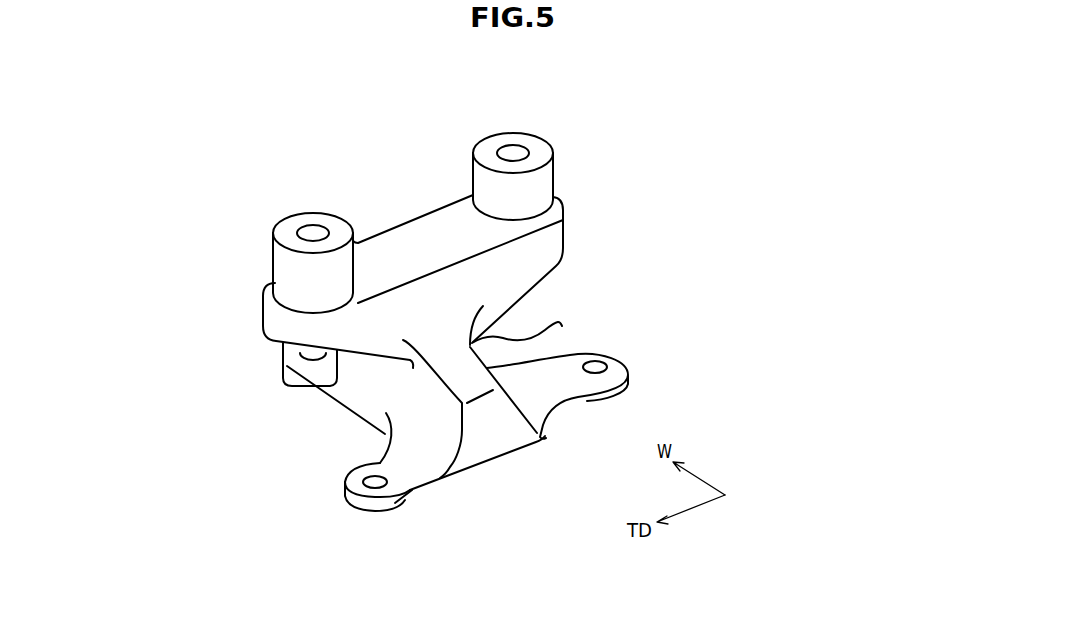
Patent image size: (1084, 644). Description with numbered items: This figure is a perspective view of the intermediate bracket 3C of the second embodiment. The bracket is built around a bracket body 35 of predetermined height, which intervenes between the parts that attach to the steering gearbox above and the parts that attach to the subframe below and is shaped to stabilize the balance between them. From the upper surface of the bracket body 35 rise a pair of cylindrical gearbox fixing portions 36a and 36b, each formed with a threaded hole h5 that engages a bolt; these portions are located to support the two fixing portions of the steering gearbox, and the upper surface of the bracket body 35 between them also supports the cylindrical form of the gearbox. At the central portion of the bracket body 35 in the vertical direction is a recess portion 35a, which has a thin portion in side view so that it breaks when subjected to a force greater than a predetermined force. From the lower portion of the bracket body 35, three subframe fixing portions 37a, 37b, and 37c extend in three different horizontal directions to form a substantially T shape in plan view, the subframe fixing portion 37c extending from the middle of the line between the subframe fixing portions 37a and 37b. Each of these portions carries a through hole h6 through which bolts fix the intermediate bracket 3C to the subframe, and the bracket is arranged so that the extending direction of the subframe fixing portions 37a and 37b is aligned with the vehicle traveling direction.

The intermediate bracket 3C is at (642, 222).
The bracket body 35 is at (553, 247).
The recess portion 35a is at (560, 328).
The gearbox fixing portion 36a is at (283, 230).
The gearbox fixing portion 36b is at (542, 147).
The threaded hole h5 is at (312, 231).
The subframe fixing portion 37a is at (363, 502).
The subframe fixing portion 37b is at (610, 356).
The subframe fixing portion 37c is at (287, 360).
The through hole h6 is at (311, 362).